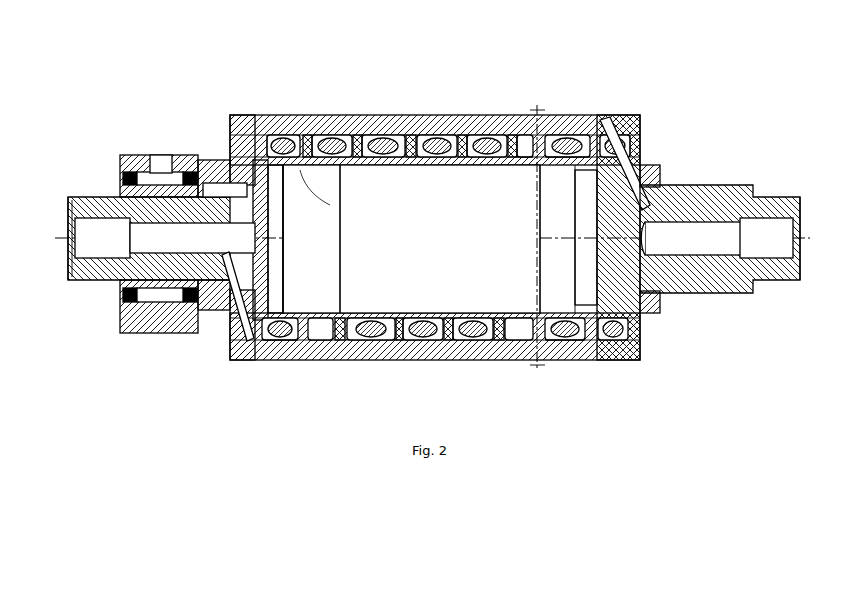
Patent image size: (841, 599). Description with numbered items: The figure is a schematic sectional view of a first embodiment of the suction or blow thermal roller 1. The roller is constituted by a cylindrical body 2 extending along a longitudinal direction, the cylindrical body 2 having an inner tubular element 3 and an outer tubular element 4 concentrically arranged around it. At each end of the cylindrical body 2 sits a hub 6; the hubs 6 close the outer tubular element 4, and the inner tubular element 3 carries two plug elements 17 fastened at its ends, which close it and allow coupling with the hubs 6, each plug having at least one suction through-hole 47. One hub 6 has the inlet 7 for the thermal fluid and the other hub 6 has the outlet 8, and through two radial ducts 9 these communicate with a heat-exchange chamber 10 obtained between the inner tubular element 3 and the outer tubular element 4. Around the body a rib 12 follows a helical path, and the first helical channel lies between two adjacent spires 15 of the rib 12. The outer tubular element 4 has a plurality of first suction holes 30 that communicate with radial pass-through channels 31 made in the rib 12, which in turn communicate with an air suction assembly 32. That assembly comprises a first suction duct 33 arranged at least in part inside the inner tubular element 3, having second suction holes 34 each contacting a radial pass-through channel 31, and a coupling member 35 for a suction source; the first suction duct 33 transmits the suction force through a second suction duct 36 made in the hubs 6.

The suction or blow thermal roller 1 is at (745, 96).
The cylindrical body 2 is at (650, 150).
The inner tubular element 3 is at (650, 151).
The outer tubular element 4 is at (563, 115).
The hubs 6 is at (714, 187).
The inlet 7 is at (171, 335).
The outlet 8 is at (100, 283).
The radial ducts 9 is at (688, 185).
The heat-exchange chamber 10 is at (558, 368).
The rib 12 is at (336, 115).
The spires 15 is at (525, 115).
The plug elements 17 is at (272, 115).
The first suction holes 30 is at (316, 115).
The radial pass-through channels 31 is at (394, 115).
The air suction assembly 32 is at (296, 210).
The first suction duct 33 is at (430, 275).
The second suction holes 34 is at (292, 165).
The coupling member 35 is at (160, 155).
The second suction duct 36 is at (214, 170).
The suction through-hole 47 is at (278, 115).